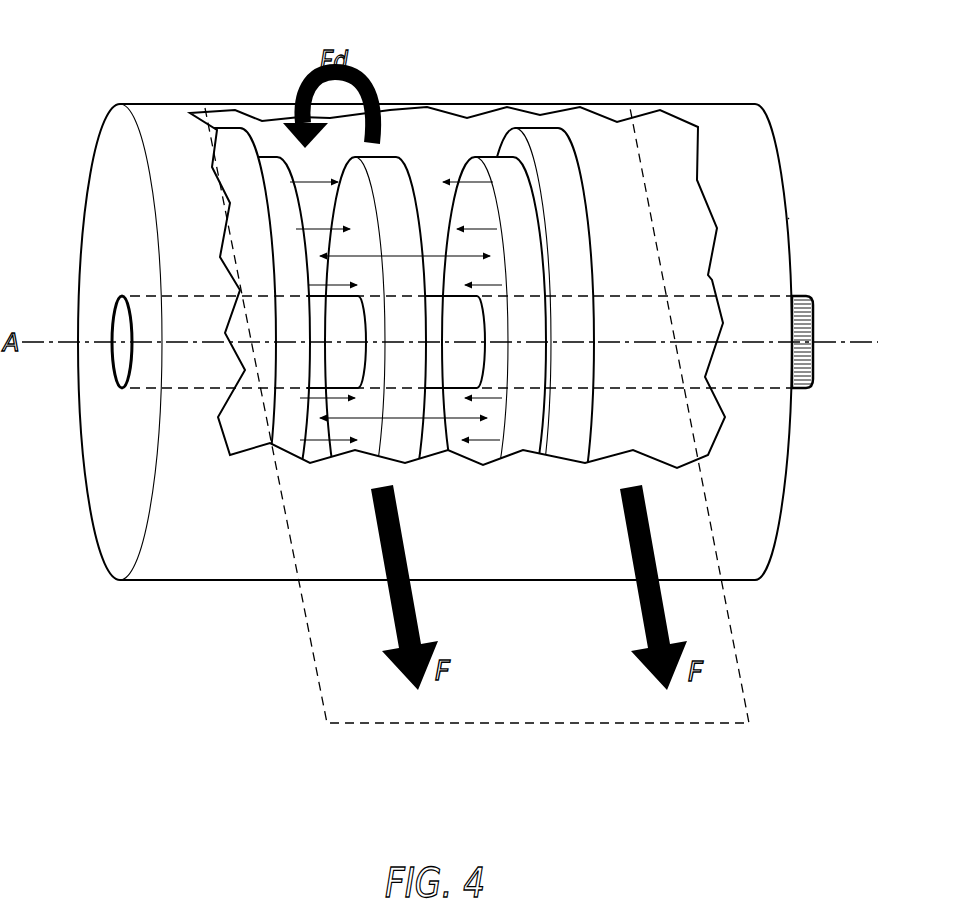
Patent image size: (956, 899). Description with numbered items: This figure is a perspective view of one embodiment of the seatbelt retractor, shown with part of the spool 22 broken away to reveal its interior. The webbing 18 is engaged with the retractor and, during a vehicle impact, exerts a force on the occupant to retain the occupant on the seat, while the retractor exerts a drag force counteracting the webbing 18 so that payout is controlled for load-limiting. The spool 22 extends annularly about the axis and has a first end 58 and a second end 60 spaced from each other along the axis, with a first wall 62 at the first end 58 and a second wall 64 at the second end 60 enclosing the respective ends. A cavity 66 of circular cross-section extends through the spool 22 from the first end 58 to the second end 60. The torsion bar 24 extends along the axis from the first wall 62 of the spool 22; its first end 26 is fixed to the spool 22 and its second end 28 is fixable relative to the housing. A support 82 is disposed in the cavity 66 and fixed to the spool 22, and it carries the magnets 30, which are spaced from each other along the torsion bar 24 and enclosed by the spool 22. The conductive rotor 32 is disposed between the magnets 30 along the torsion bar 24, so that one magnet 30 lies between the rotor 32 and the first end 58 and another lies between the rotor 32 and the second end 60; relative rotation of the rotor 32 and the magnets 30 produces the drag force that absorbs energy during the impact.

The webbing 18 is at (737, 650).
The spool 22 is at (715, 100).
The torsion bar 24 is at (690, 297).
The first end of the torsion bar 26 is at (118, 392).
The second end of the torsion bar 28 is at (810, 310).
The magnet 30 is at (263, 157).
The rotor 32 is at (408, 175).
The first end of the spool 58 is at (80, 190).
The second end of the spool 60 is at (783, 162).
The first wall 62 is at (134, 232).
The second wall 64 is at (788, 218).
The cavity 66 is at (608, 145).
The support 82 is at (230, 132).